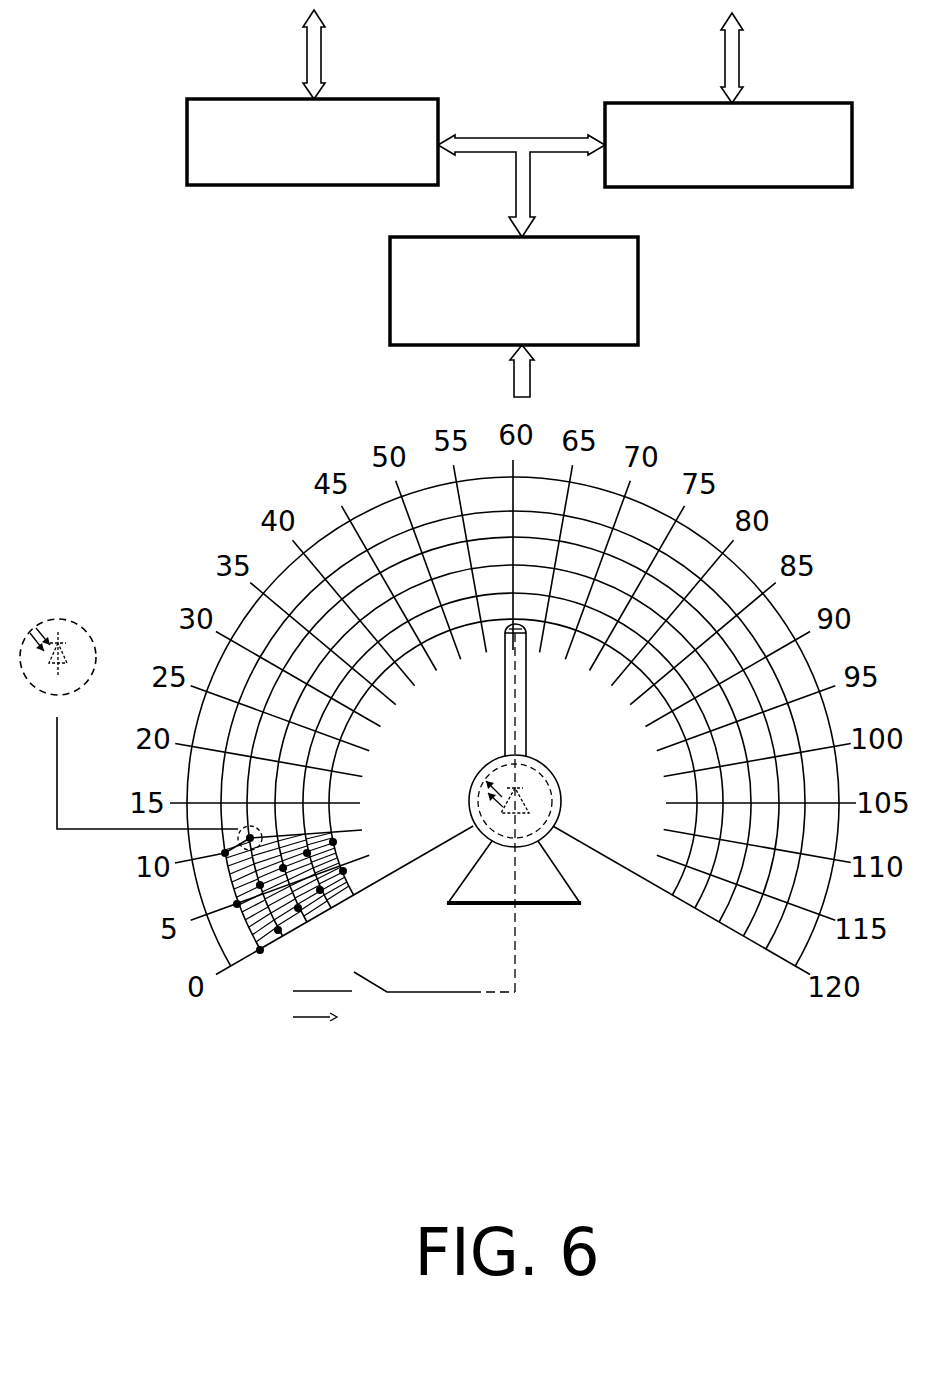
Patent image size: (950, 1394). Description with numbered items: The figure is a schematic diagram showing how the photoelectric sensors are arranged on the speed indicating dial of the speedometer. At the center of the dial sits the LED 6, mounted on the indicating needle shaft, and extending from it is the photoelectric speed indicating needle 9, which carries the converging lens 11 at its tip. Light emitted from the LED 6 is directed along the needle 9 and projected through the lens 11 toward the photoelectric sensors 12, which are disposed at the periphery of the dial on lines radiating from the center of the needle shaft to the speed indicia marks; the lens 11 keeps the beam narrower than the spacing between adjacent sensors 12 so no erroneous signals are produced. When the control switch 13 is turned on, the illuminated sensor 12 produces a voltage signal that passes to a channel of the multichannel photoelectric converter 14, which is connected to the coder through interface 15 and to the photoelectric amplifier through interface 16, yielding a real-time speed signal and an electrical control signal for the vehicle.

The LED 6 is at (545, 817).
The photoelectric speed indicating needle 9 is at (523, 700).
The converging lens 11 is at (508, 633).
The photoelectric sensor 12 is at (141, 684).
The control switch 13 is at (371, 982).
The multichannel photoelectric converter 14 is at (390, 292).
The coder interface 15 is at (269, 98).
The photoelectric amplifier interface 16 is at (770, 104).